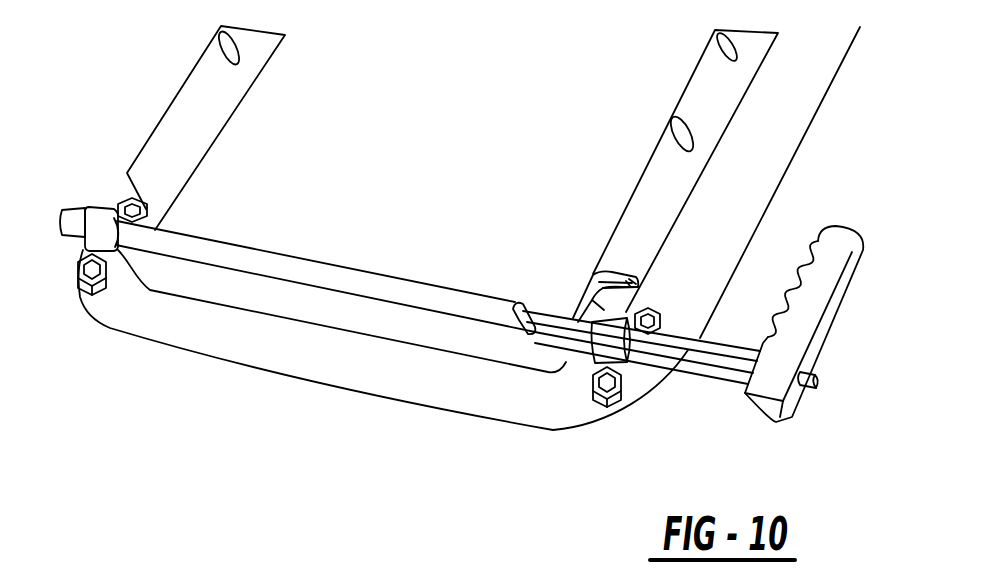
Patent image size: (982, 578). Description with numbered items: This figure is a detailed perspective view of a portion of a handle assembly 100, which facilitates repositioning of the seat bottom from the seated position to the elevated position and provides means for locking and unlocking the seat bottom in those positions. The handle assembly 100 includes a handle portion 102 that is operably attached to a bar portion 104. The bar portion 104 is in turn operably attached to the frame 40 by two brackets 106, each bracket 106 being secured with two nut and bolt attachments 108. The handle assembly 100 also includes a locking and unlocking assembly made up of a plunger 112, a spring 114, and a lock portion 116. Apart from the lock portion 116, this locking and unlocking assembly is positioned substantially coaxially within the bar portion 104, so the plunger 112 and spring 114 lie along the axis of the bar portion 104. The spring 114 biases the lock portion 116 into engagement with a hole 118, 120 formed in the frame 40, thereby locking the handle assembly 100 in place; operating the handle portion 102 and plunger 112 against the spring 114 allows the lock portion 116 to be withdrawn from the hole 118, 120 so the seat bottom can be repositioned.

The frame 40 is at (710, 108).
The handle assembly 100 is at (418, 141).
The handle portion 102 is at (837, 303).
The bar portion 104 is at (415, 293).
The brackets 106 is at (102, 222).
The nut and bolt attachments 108 is at (85, 262).
The plunger 112 is at (807, 390).
The spring 114 is at (546, 327).
The lock portion 116 is at (627, 282).
The hole 118 is at (612, 263).
The hole 120 is at (630, 277).